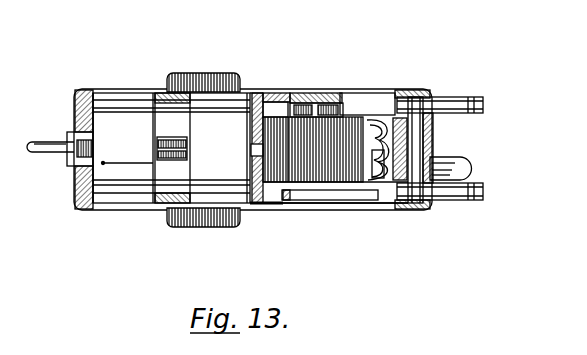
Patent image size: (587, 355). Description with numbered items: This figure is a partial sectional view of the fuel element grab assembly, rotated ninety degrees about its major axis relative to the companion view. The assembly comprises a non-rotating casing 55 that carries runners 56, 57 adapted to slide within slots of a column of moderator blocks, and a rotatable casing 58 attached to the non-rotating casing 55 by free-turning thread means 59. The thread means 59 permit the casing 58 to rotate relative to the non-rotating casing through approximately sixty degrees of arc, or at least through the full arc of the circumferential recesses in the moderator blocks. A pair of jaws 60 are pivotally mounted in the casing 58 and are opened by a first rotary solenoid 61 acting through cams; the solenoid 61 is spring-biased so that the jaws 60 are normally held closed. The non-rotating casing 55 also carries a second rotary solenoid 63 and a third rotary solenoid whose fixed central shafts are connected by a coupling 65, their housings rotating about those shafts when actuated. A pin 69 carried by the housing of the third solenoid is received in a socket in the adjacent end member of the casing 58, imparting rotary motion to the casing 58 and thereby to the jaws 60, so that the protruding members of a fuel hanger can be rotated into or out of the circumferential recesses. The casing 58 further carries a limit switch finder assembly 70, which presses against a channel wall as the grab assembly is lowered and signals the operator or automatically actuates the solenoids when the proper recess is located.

The non-rotating casing 55 is at (103, 87).
The runner 56 is at (182, 72).
The runner 57 is at (225, 223).
The rotatable casing 58 is at (383, 90).
The free-turning thread means 59 is at (267, 207).
The jaws 60 is at (474, 113).
The first rotary solenoid 61 is at (323, 172).
The second rotary solenoid 63 is at (238, 110).
The coupling 65 is at (173, 140).
The pin 69 is at (264, 148).
The limit switch finder assembly 70 is at (473, 166).